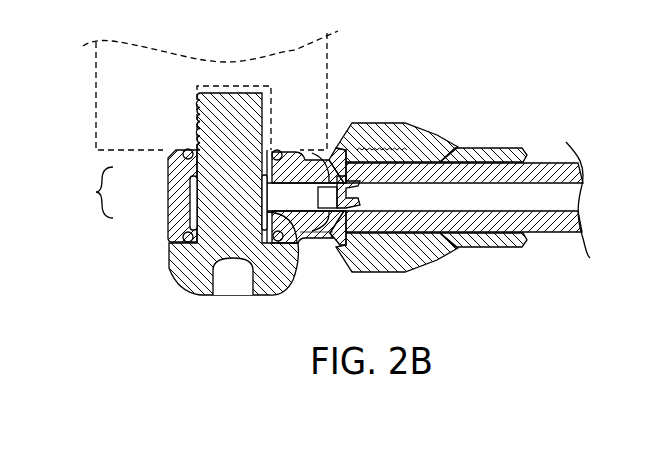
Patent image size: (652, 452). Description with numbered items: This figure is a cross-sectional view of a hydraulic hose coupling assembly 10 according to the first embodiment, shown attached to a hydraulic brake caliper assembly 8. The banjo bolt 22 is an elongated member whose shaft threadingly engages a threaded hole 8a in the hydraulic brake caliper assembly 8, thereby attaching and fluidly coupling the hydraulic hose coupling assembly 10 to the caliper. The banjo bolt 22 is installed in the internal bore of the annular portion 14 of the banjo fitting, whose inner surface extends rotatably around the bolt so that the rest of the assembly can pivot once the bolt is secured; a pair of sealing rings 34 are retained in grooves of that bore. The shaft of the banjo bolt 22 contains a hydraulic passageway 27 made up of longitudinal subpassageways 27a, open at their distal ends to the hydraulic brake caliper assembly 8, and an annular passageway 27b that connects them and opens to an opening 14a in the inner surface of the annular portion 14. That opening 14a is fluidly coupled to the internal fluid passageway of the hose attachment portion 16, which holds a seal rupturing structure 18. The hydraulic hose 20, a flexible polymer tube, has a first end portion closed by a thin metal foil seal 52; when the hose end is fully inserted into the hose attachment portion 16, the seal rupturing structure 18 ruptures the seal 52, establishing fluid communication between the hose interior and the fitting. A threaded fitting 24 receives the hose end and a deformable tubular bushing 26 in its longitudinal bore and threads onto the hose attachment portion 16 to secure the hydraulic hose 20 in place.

The hydraulic brake caliper assembly 8 is at (330, 62).
The threaded hole 8a is at (275, 97).
The hydraulic hose coupling assembly 10 is at (523, 83).
The annular portion 14 is at (169, 230).
The opening 14a is at (296, 245).
The hose attachment portion 16 is at (322, 238).
The seal rupturing structure 18 is at (321, 156).
The hydraulic hose 20 is at (545, 163).
The banjo bolt 22 is at (197, 118).
The threaded fitting 24 is at (394, 124).
The deformable tubular bushing 26 is at (450, 153).
The hydraulic passageway 27 is at (97, 193).
The longitudinal subpassageway 27a is at (265, 178).
The annular passageway 27b is at (194, 185).
The sealing ring 34 is at (181, 153).
The seal 52 is at (343, 212).